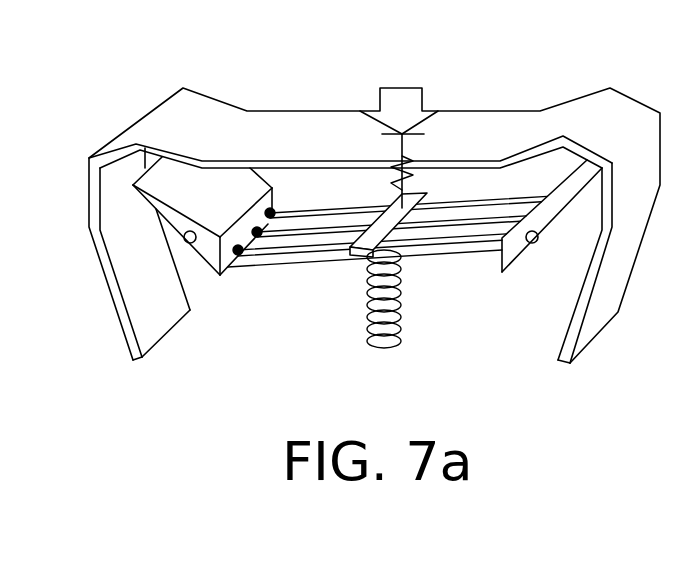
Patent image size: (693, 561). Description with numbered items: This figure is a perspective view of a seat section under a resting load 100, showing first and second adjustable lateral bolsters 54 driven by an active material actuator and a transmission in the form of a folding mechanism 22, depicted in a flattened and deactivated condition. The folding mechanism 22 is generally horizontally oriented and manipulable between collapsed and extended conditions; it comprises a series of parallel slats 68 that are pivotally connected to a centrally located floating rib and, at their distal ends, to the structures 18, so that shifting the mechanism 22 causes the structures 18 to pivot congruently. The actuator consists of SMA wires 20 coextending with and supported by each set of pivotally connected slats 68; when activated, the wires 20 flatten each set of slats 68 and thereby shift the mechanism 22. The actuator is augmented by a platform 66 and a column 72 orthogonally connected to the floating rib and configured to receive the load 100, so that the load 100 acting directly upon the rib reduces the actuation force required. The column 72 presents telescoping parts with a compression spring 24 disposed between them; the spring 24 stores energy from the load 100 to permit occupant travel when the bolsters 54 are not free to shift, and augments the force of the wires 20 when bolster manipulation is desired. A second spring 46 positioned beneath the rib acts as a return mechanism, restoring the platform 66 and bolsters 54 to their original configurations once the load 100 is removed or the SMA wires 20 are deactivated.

The structures 18 is at (547, 243).
The SMA wires 20 is at (268, 250).
The folding mechanism 22 is at (328, 325).
The compression spring 24 is at (403, 172).
The second spring 46 is at (367, 283).
The bolsters 54 is at (168, 96).
The platform 66 is at (403, 137).
The parallel slats 68 is at (465, 257).
The column 72 is at (364, 154).
The load 100 is at (402, 88).